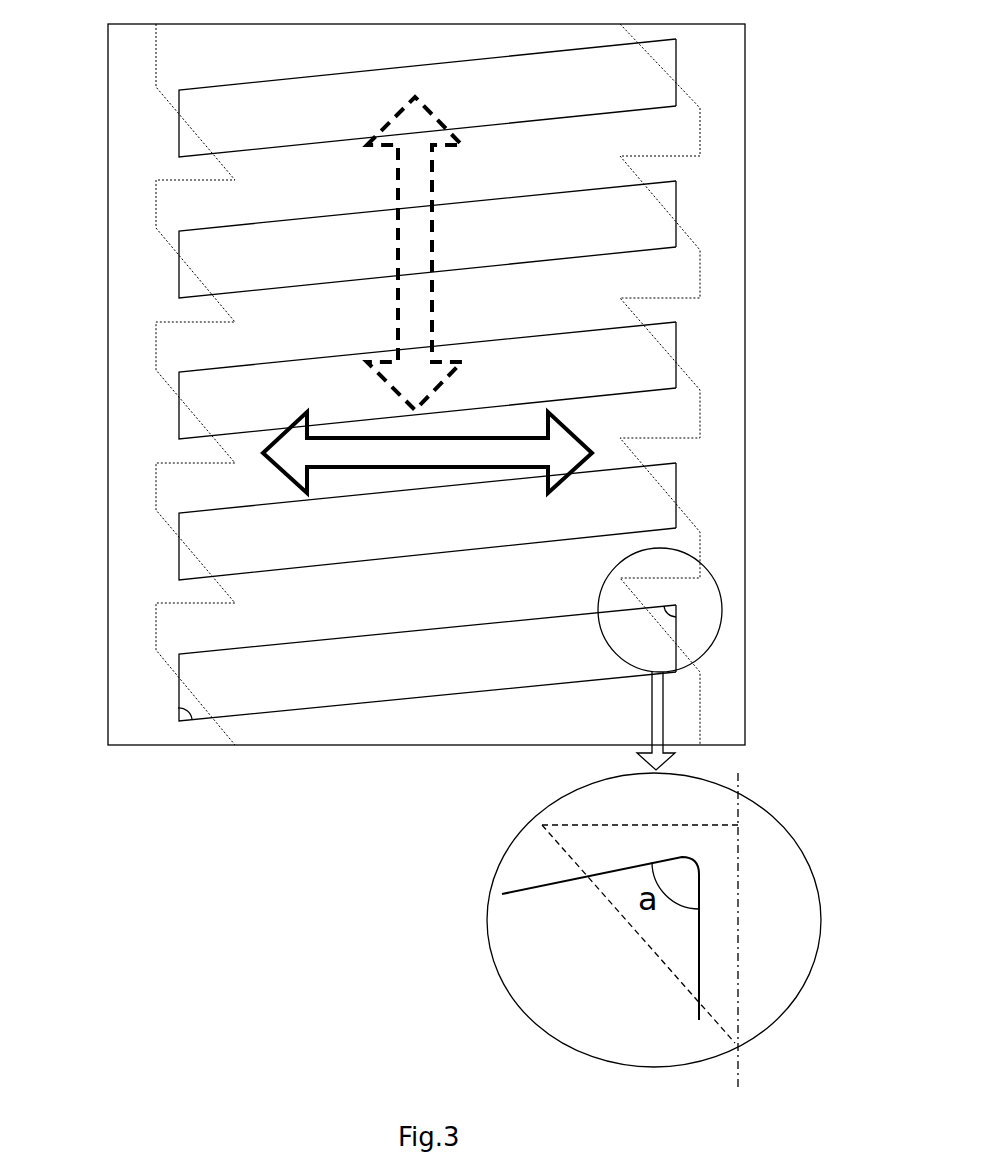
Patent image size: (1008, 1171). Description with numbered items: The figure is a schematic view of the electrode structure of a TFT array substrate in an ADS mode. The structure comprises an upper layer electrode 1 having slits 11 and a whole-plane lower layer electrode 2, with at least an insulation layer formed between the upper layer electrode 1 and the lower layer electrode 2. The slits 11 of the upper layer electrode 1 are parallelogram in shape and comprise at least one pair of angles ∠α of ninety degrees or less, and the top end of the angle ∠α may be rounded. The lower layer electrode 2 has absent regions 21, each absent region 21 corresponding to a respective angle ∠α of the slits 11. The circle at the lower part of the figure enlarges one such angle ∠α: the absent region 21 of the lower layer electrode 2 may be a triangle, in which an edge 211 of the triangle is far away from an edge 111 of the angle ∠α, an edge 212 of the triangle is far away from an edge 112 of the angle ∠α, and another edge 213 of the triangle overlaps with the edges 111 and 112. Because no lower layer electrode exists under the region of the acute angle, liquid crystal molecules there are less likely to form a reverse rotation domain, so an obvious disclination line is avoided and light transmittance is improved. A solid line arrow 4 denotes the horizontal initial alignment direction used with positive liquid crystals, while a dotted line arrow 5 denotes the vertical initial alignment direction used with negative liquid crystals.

The upper layer electrode 1 is at (722, 642).
The lower layer electrode 2 is at (698, 532).
The absent region 21 is at (692, 325).
The slit 11 is at (603, 483).
The solid line arrow 4 is at (300, 428).
The dotted line arrow 5 is at (393, 233).
The edge of the angle ∠α 111 is at (527, 890).
The edge of the angle ∠α 112 is at (690, 957).
The edge of the triangle 211 is at (647, 825).
The edge of the triangle 212 is at (738, 907).
The edge of the triangle 213 is at (702, 1007).